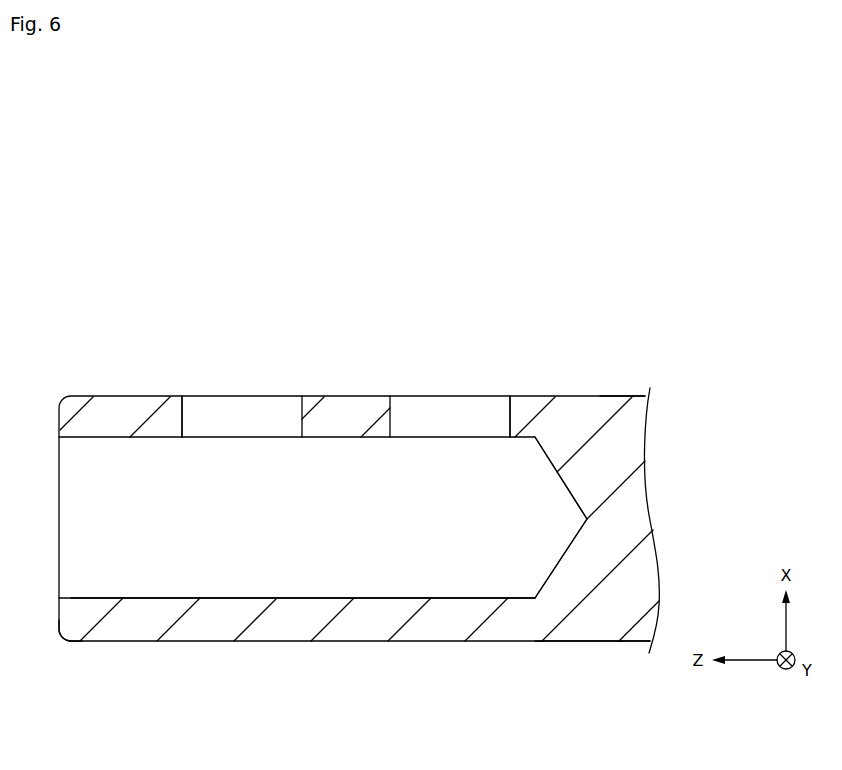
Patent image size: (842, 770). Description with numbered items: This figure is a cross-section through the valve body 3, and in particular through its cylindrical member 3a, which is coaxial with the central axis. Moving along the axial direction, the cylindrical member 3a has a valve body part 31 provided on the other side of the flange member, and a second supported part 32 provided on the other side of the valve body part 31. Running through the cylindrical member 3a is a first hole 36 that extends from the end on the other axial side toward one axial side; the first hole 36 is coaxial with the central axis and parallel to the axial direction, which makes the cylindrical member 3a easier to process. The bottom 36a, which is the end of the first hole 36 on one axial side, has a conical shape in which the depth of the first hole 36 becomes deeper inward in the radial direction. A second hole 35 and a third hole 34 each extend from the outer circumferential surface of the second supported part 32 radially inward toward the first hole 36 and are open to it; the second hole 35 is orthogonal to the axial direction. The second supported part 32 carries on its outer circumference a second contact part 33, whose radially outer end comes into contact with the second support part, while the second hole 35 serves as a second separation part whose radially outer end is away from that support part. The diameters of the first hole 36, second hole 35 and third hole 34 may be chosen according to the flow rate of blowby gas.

The valve body 3 is at (587, 428).
The cylindrical member 3a is at (629, 428).
The valve body part 31 is at (595, 627).
The second supported part 32 is at (168, 630).
The second contact part 33 is at (73, 641).
The third hole 34 is at (392, 420).
The second hole 35 is at (184, 419).
The first hole 36 is at (123, 440).
The bottom 36a is at (557, 472).